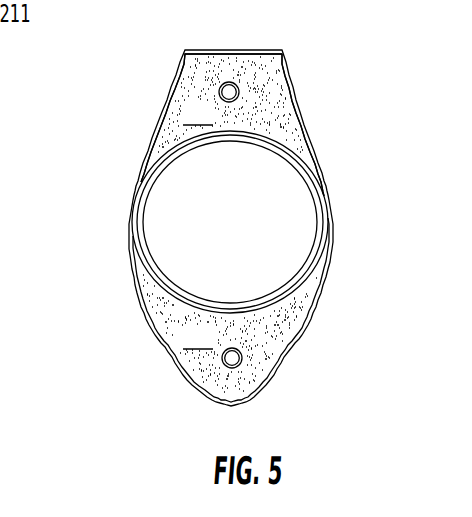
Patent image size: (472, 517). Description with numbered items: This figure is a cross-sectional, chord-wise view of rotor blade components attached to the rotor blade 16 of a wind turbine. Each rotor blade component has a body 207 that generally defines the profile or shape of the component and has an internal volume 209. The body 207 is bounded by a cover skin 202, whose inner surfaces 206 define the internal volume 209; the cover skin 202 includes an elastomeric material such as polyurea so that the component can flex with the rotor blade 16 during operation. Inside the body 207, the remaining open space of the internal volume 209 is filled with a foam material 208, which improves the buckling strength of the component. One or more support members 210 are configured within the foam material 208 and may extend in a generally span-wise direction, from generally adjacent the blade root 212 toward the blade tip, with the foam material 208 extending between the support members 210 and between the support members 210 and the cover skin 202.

The rotor blade 16 is at (207, 240).
The cover skin 202 is at (297, 77).
The inner surfaces 206 is at (273, 99).
The body 207 is at (184, 83).
The foam material 208 is at (263, 59).
The internal volume 209 is at (197, 226).
The support members 210 is at (229, 81).
The blade root 212 is at (333, 232).